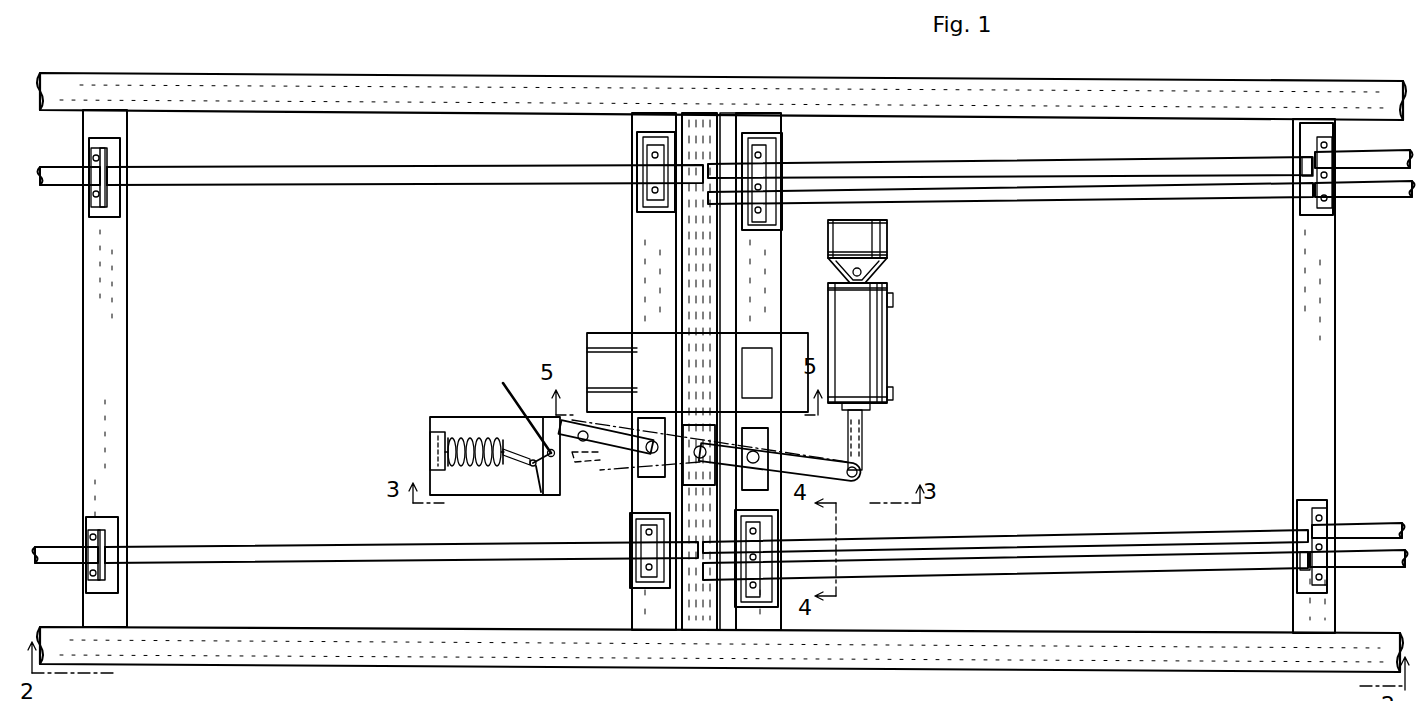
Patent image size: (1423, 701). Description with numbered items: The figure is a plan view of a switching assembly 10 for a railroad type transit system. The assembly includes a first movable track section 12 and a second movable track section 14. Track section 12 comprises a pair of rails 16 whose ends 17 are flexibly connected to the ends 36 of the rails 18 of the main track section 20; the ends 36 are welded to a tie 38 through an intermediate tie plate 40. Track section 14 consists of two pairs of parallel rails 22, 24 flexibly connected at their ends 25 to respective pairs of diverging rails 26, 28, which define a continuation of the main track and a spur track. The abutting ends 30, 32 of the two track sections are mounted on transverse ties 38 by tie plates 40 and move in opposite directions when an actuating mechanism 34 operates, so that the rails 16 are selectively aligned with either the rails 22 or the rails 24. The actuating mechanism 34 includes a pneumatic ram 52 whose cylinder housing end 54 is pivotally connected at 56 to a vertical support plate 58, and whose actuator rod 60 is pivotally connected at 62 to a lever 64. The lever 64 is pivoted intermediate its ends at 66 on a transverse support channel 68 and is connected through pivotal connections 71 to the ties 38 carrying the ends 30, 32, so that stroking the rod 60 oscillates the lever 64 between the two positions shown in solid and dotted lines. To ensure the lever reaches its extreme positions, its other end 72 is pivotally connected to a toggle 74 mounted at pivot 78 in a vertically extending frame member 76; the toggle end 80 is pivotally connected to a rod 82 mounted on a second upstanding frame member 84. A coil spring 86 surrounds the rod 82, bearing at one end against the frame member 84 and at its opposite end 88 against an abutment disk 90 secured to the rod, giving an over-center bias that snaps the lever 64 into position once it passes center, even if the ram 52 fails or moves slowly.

The switching assembly 10 is at (1051, 129).
The first movable track section 12 is at (404, 302).
The second movable track section 14 is at (1008, 313).
The rails 16 is at (186, 180).
The ends of rails 17 is at (130, 165).
The rails of main track section 18 is at (62, 172).
The main track section 20 is at (72, 305).
The rails 22 is at (1207, 170).
The rails 24 is at (1200, 192).
The ends 25 is at (1305, 165).
The diverging rails 26 is at (1390, 165).
The diverging rails 28 is at (1388, 190).
The abutting ends 30 is at (688, 170).
The abutting ends 32 is at (718, 170).
The actuating mechanism 34 is at (877, 340).
The ends of rails 36 is at (95, 178).
The tie 38 is at (127, 340).
The tie plate 40 is at (100, 158).
The pneumatic ram 52 is at (890, 372).
The end of cylinder housing 54 is at (878, 275).
The pivotal connection 56 is at (850, 274).
The support plate 58 is at (887, 229).
The actuator rod 60 is at (862, 445).
The pivotal connection 62 is at (858, 472).
The lever 64 is at (800, 476).
The pivot 66 is at (702, 458).
The transverse support channel 68 is at (703, 430).
The slide block 71 is at (753, 450).
The other end of lever 72 is at (551, 449).
The toggle 74 is at (541, 474).
The frame member 76 is at (553, 478).
The pivot 78 is at (521, 405).
The end of toggle 80 is at (532, 468).
The rod 82 is at (520, 458).
The second upstanding frame member 84 is at (430, 445).
The coil spring 86 is at (470, 467).
The opposite end of spring 88 is at (468, 447).
The abutment disk 90 is at (507, 467).